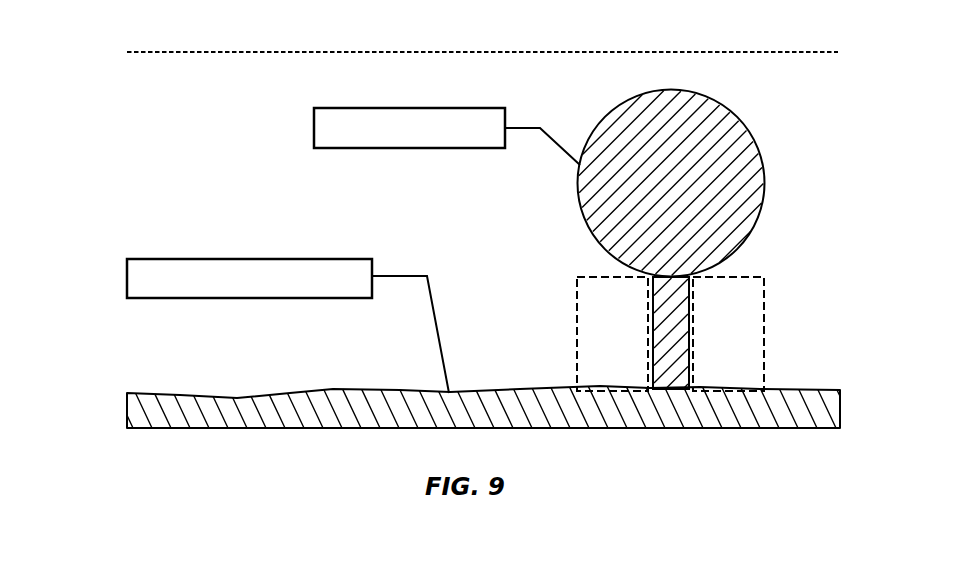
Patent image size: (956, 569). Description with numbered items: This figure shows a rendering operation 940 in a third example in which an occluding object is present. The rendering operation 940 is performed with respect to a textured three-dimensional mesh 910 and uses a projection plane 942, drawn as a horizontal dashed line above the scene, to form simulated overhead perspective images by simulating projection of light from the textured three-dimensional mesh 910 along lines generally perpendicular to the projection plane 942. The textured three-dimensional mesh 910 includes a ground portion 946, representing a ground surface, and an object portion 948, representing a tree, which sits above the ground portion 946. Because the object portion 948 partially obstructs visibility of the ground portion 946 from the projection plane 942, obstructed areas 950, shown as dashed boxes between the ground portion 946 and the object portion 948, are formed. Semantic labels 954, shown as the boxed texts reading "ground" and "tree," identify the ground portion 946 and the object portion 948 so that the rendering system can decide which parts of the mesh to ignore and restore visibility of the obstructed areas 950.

The textured three-dimensional mesh 910 is at (474, 391).
The rendering operation 940 is at (97, 123).
The projection plane 942 is at (768, 52).
The ground portion 946 is at (830, 412).
The object portion 948 is at (757, 178).
The obstructed areas 950 is at (577, 284).
The semantic labels 954 is at (314, 128).